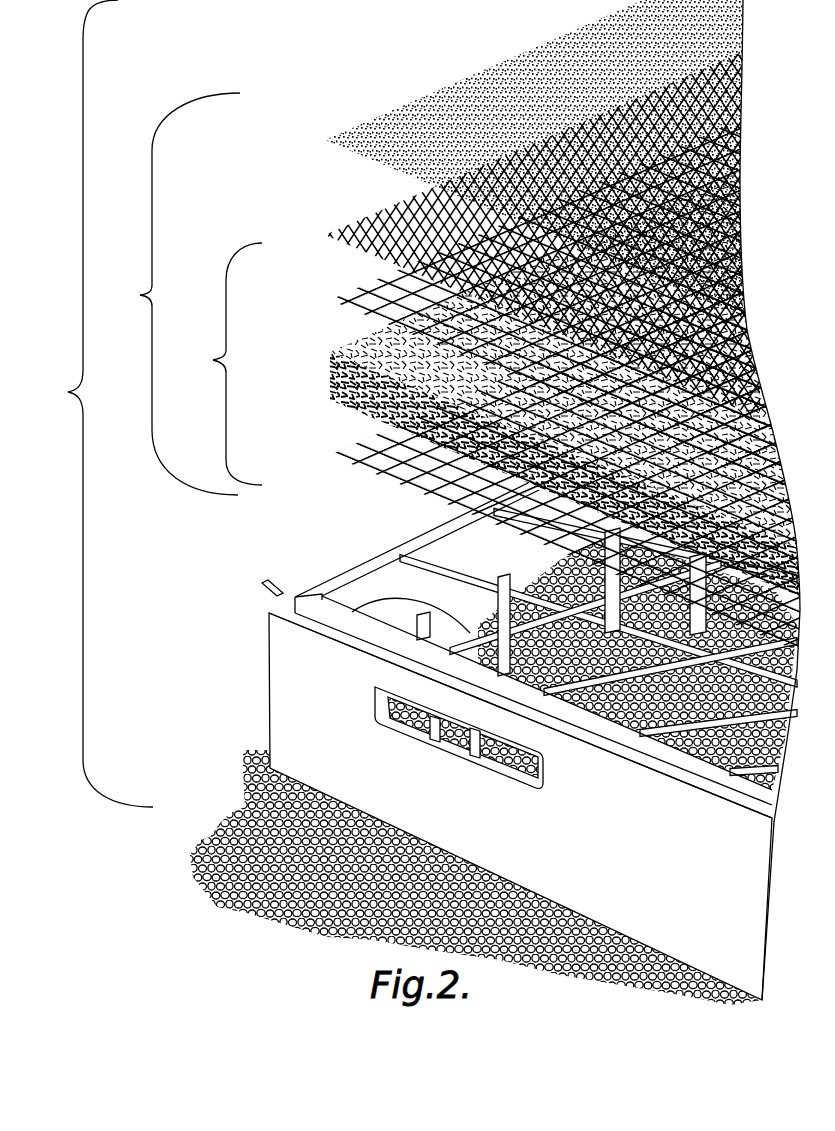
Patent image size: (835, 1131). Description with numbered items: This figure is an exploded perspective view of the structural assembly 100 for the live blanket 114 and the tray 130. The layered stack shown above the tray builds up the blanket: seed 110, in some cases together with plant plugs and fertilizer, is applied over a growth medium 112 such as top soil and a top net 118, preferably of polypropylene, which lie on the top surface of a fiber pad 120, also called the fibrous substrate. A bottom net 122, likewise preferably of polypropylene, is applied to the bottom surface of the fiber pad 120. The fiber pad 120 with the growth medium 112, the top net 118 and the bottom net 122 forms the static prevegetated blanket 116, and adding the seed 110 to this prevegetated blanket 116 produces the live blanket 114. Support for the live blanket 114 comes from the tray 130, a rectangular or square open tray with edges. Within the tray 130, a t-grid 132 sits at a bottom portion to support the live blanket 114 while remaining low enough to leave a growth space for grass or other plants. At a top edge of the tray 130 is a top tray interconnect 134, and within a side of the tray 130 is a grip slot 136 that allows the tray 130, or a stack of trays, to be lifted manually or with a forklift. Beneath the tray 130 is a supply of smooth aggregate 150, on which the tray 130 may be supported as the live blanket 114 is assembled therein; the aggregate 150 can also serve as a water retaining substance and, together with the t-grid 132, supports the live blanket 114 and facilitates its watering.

The structural assembly 100 is at (88, 403).
The seed 110 is at (338, 128).
The growth medium 112 is at (338, 228).
The live blanket 114 is at (166, 294).
The static prevegetated blanket 116 is at (212, 364).
The top net 118 is at (332, 302).
The fiber pad 120 is at (332, 366).
The bottom net 122 is at (332, 462).
The tray 130 is at (318, 558).
The t-grid 132 is at (352, 612).
The top tray interconnect 134 is at (287, 603).
The grip slot 136 is at (530, 790).
The smooth aggregate 150 is at (217, 827).